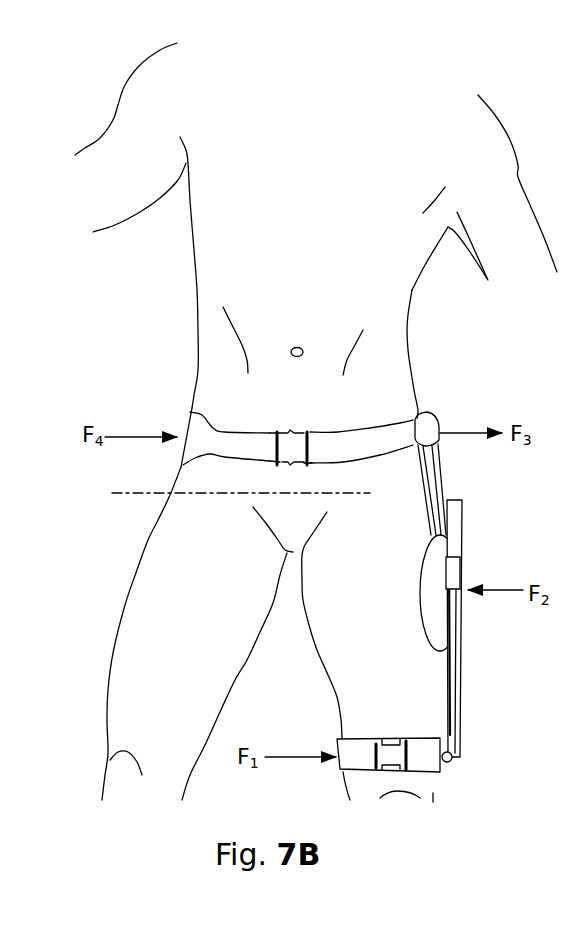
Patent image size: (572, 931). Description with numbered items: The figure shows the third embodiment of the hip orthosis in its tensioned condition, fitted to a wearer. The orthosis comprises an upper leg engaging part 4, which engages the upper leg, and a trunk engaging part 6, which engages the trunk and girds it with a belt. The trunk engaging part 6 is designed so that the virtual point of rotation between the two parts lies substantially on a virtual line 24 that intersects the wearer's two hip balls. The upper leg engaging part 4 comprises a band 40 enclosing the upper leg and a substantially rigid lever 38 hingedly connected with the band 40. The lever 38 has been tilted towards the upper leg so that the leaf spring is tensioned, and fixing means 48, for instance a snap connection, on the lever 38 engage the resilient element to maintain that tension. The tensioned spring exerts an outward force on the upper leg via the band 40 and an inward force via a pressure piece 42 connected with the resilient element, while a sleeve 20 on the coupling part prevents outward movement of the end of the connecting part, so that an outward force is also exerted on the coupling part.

The upper leg engaging part 4 is at (471, 763).
The trunk engaging part 6 is at (338, 431).
The sleeve 20 is at (440, 423).
The virtual line 24 is at (137, 495).
The lever 38 is at (458, 702).
The band 40 is at (337, 750).
The pressure piece 42 is at (437, 613).
The fixing means 48 is at (461, 568).